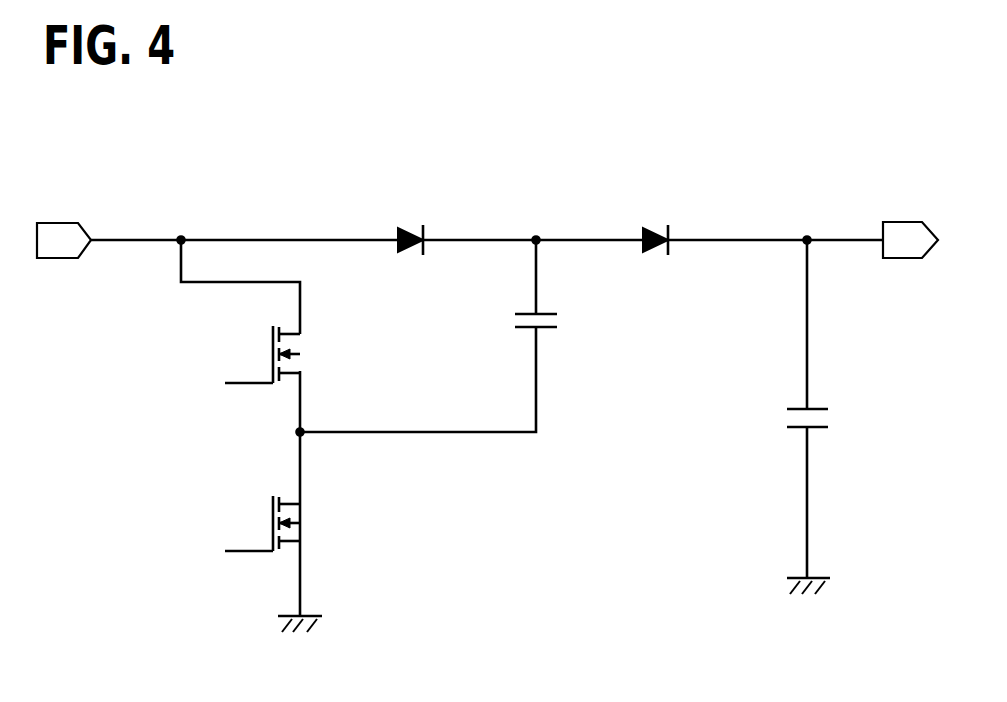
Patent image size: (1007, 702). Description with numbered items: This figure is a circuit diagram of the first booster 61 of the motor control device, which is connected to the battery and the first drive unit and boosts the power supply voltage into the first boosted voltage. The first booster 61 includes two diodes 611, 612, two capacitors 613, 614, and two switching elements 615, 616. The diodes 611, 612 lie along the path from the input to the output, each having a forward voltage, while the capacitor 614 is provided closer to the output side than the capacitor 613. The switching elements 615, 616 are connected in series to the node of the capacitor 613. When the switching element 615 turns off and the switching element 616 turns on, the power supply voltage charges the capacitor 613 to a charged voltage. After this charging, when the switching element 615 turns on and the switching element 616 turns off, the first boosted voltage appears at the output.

The first booster 61 is at (786, 116).
The diode 611 is at (407, 253).
The diode 612 is at (652, 256).
The capacitor 613 is at (528, 332).
The capacitor 614 is at (792, 406).
The switching element 615 is at (271, 352).
The switching element 616 is at (271, 522).